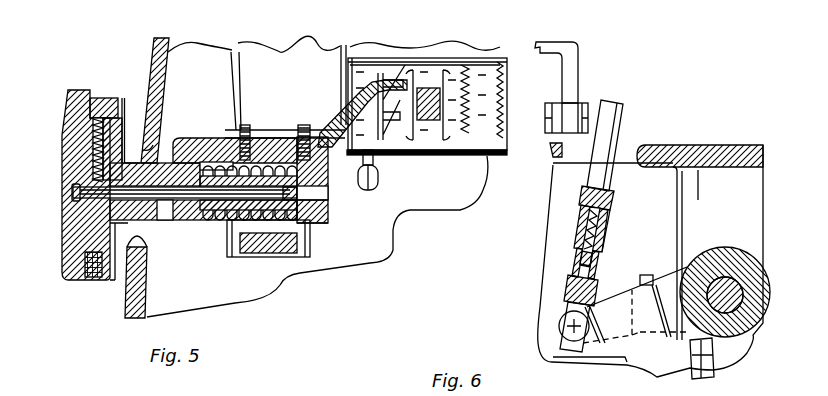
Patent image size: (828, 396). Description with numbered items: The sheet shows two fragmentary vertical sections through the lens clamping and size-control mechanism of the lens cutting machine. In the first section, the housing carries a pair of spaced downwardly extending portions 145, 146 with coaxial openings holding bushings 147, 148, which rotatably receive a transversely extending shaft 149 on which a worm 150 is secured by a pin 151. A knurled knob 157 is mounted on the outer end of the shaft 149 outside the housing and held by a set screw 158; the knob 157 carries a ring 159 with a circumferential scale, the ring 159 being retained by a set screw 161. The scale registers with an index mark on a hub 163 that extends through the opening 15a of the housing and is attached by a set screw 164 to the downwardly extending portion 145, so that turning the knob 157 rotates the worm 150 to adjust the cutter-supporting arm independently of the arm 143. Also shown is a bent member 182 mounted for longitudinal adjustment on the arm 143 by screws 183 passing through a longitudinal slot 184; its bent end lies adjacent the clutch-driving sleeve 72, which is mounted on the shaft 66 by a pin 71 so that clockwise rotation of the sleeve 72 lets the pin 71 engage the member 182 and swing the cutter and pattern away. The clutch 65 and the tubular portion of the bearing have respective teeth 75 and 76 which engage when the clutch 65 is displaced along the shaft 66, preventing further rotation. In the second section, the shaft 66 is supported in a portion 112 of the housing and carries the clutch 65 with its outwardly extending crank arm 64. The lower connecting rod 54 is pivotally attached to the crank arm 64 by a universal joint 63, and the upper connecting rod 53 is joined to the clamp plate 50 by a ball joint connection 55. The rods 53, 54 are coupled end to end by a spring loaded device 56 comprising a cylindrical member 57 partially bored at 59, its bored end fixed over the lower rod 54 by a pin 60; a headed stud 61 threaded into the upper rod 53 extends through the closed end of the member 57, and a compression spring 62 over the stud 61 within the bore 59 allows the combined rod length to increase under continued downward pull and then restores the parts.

In FIG. 5, the opening 15a is at (128, 250).
In FIG. 6, the clamp plate 50 is at (578, 50).
In FIG. 6, the upper connecting rod 53 is at (618, 124).
In FIG. 6, the lower connecting rod 54 is at (587, 307).
In FIG. 6, the ball joint connection 55 is at (590, 105).
In FIG. 6, the spring loaded device 56 is at (616, 210).
In FIG. 6, the cylindrical member 57 is at (576, 226).
In FIG. 6, the bore 59 is at (600, 235).
In FIG. 6, the pin 60 is at (570, 277).
In FIG. 6, the headed stud 61 is at (582, 197).
In FIG. 6, the compression spring 62 is at (582, 234).
In FIG. 6, the universal joint 63 is at (558, 332).
In FIG. 5, the crank arm 64 is at (433, 107).
In FIG. 6, the crank arm 64 is at (618, 297).
In FIG. 5, the clutch 65 is at (445, 62).
In FIG. 6, the clutch 65 is at (712, 257).
In FIG. 5, the shaft 66 is at (343, 100).
In FIG. 6, the shaft 66 is at (730, 262).
In FIG. 5, the pin 71 is at (373, 160).
In FIG. 6, the pin 71 is at (714, 352).
In FIG. 5, the clutch-driving sleeve 72 is at (381, 60).
In FIG. 5, the teeth 75 is at (463, 130).
In FIG. 5, the teeth 76 is at (475, 130).
In FIG. 6, the housing portion 112 is at (720, 180).
In FIG. 5, the arm 143 is at (210, 138).
In FIG. 5, the downwardly extending portion 145 is at (177, 136).
In FIG. 5, the downwardly extending portion 146 is at (327, 226).
In FIG. 5, the bushing 147 is at (203, 244).
In FIG. 5, the bushing 148 is at (328, 208).
In FIG. 5, the shaft 149 is at (185, 218).
In FIG. 5, the worm 150 is at (207, 205).
In FIG. 5, the pin 151 is at (268, 238).
In FIG. 5, the knurled knob 157 is at (66, 131).
In FIG. 5, the set screw 158 is at (67, 163).
In FIG. 5, the ring 159 is at (100, 98).
In FIG. 5, the set screw 161 is at (92, 278).
In FIG. 5, the hub 163 is at (124, 100).
In FIG. 5, the set screw 164 is at (162, 222).
In FIG. 5, the bent member 182 is at (360, 63).
In FIG. 6, the bent member 182 is at (652, 276).
In FIG. 5, the screws 183 is at (245, 120).
In FIG. 5, the longitudinal slot 184 is at (267, 134).